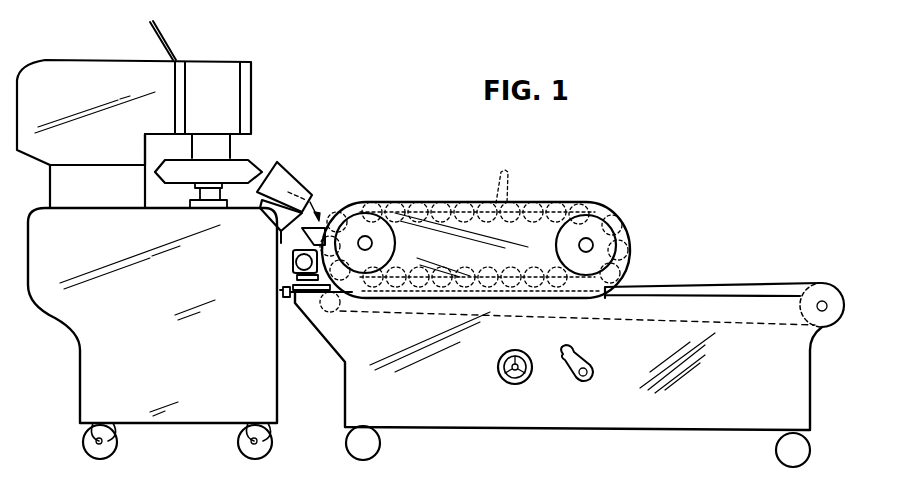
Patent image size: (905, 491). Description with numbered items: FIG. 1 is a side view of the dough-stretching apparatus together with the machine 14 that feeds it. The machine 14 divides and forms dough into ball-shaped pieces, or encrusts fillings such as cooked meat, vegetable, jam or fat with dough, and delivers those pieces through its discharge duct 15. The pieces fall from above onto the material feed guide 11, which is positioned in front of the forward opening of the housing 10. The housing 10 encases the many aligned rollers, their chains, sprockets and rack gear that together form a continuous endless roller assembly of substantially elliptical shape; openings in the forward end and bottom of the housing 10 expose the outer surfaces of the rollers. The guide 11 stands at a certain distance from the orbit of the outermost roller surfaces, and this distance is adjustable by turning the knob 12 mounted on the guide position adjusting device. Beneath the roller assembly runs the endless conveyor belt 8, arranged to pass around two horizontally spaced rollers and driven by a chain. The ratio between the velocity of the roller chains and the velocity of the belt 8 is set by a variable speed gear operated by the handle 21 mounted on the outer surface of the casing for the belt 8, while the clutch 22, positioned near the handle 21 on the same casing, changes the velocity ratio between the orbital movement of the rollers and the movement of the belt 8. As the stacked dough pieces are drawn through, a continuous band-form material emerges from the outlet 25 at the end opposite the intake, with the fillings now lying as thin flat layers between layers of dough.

The endless conveyor belt 8 is at (755, 258).
The housing 10 is at (457, 200).
The material feed guide 11 is at (325, 227).
The knob 12 is at (283, 312).
The machine 14 is at (188, 358).
The discharge duct 15 is at (300, 182).
The handle 21 is at (500, 378).
The clutch 22 is at (573, 380).
The outlet 25 is at (622, 284).